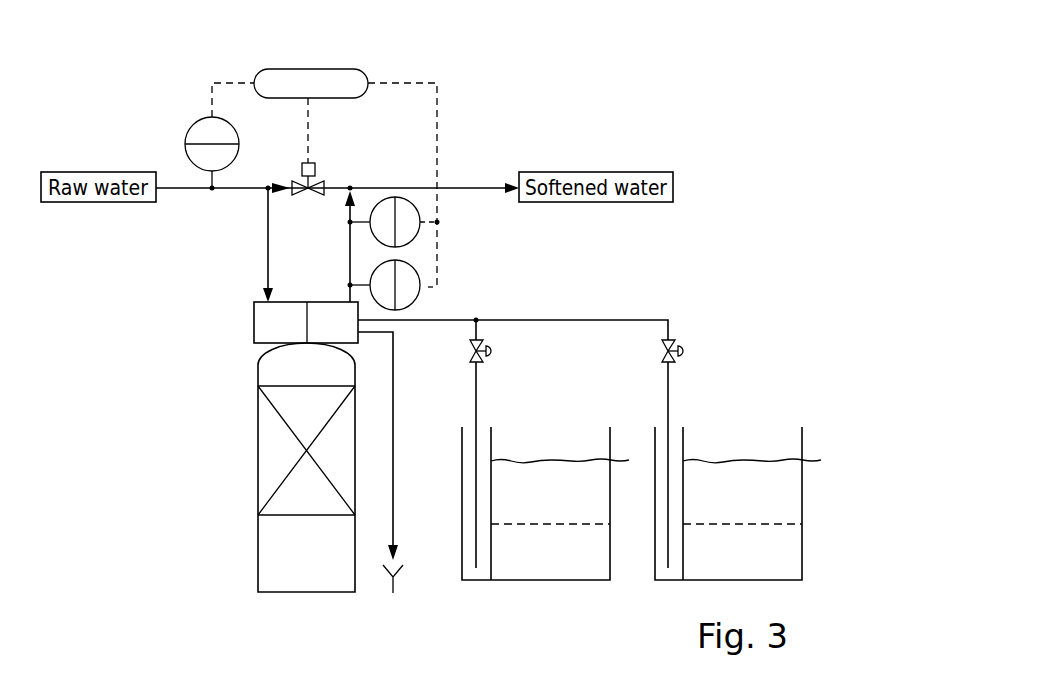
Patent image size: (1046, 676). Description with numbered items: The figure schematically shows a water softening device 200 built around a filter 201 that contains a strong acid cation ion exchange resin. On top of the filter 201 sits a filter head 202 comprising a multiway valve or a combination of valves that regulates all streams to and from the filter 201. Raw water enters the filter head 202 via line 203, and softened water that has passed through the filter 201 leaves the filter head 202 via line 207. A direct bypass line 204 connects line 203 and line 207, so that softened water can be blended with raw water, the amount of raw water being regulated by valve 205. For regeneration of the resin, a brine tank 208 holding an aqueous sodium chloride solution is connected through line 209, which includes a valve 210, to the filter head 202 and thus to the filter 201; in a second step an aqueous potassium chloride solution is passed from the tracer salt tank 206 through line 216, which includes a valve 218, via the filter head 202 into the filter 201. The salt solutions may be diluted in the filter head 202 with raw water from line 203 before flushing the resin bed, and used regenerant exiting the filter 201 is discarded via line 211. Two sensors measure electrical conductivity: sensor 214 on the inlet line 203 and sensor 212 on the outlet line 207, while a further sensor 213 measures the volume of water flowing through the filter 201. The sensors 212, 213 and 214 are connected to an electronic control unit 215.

The water softening device 200 is at (198, 530).
The filter 201 is at (265, 428).
The filter head 202 is at (268, 326).
The line 203 is at (267, 222).
The bypass line 204 is at (337, 187).
The valve 205 is at (297, 175).
The tracer salt tank 206 is at (723, 504).
The line 207 is at (349, 238).
The brine tank 208 is at (528, 504).
The line 209 is at (472, 330).
The valve 210 is at (500, 350).
The line 211 is at (393, 395).
The sensor 212 is at (410, 275).
The sensor 213 is at (410, 230).
The sensor 214 is at (200, 133).
The electronic control unit 215 is at (293, 82).
The line 216 is at (672, 327).
The valve 218 is at (695, 350).